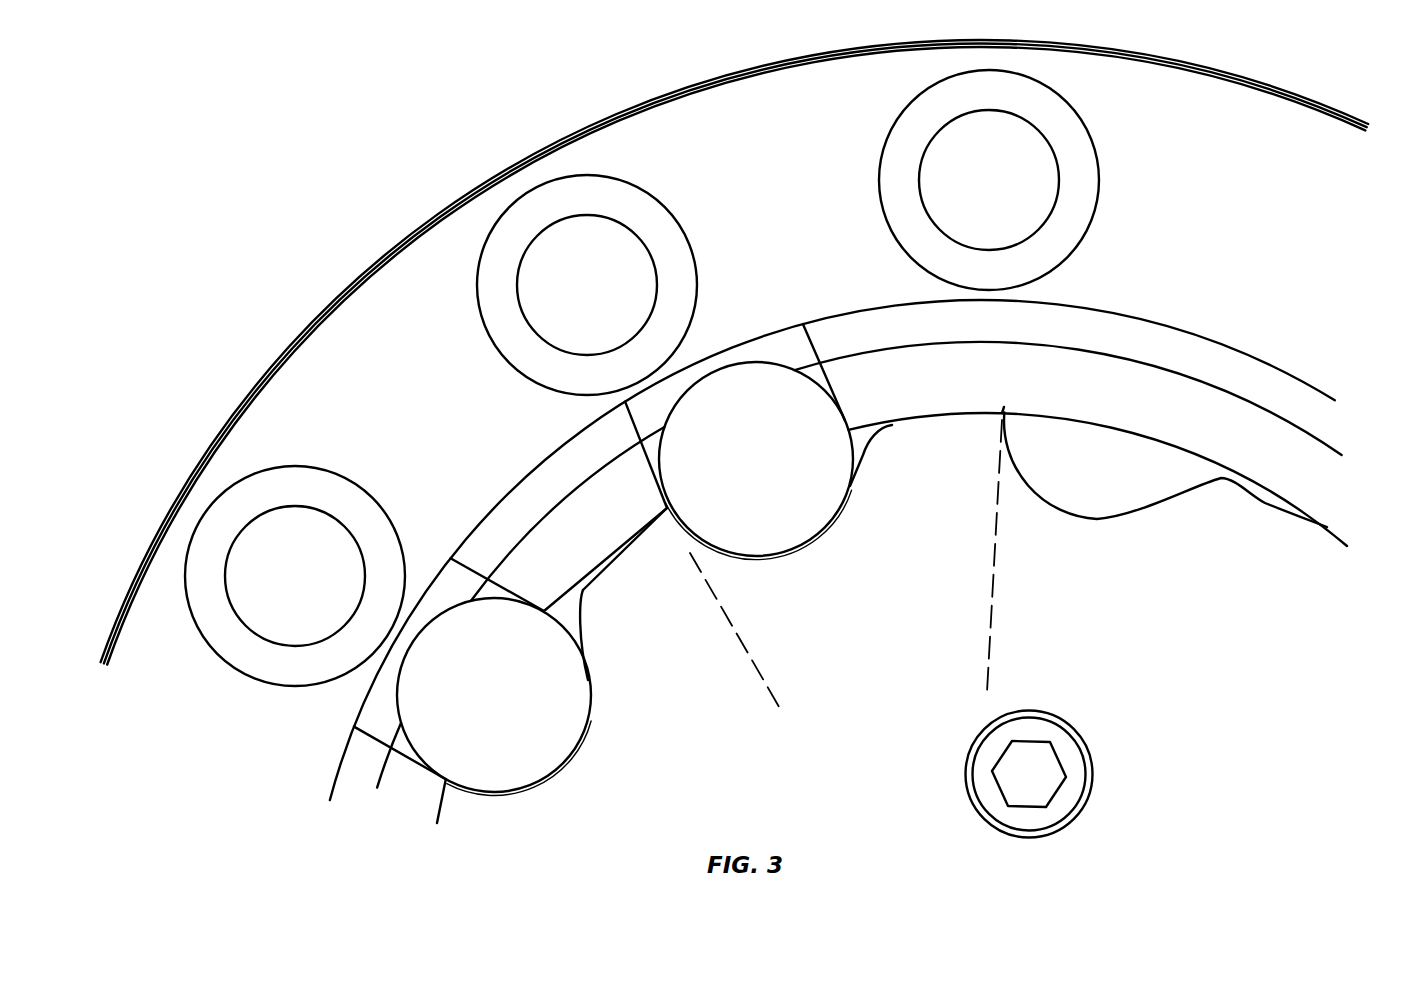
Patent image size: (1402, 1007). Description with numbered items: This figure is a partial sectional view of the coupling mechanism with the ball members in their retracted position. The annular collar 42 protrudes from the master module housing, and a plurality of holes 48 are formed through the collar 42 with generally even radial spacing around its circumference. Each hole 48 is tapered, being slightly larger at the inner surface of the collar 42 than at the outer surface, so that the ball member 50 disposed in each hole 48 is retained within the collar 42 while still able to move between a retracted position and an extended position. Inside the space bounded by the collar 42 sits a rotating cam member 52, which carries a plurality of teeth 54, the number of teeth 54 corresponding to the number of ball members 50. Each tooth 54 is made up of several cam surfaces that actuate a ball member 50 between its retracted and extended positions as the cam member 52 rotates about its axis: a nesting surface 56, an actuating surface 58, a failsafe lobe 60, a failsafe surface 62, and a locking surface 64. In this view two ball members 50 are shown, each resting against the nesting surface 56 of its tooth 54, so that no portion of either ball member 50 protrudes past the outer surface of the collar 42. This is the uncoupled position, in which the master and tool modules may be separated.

The annular collar 42 is at (598, 551).
The holes 48 is at (432, 578).
The ball member 50 is at (547, 721).
The rotating cam member 52 is at (894, 737).
The teeth 54 is at (908, 524).
The nesting surface 56 is at (565, 765).
The actuating surface 58 is at (587, 642).
The failsafe lobe 60 is at (585, 590).
The failsafe surface 62 is at (613, 565).
The locking surface 64 is at (642, 533).